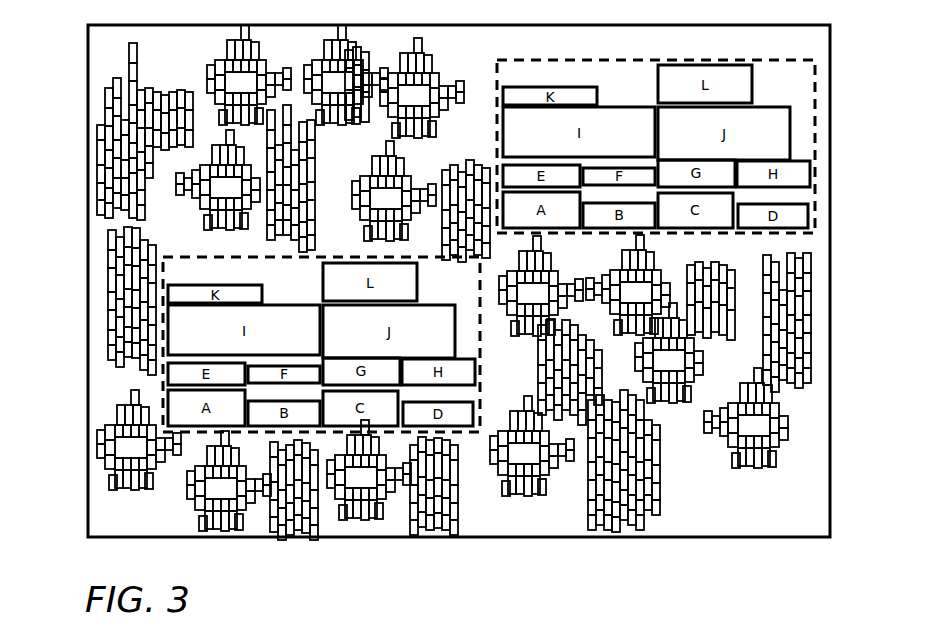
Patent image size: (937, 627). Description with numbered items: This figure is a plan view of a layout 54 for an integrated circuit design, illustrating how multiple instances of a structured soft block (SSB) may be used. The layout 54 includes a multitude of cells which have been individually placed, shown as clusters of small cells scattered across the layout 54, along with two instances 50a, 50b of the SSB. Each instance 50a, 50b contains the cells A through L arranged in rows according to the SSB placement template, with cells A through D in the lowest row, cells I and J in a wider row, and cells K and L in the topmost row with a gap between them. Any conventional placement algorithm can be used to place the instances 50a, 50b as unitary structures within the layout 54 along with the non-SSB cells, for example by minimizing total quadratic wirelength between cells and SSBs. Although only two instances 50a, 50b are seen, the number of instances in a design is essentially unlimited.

The instance of the structured soft block 50a is at (815, 122).
The instance of the structured soft block 50b is at (163, 382).
The layout 54 is at (832, 492).